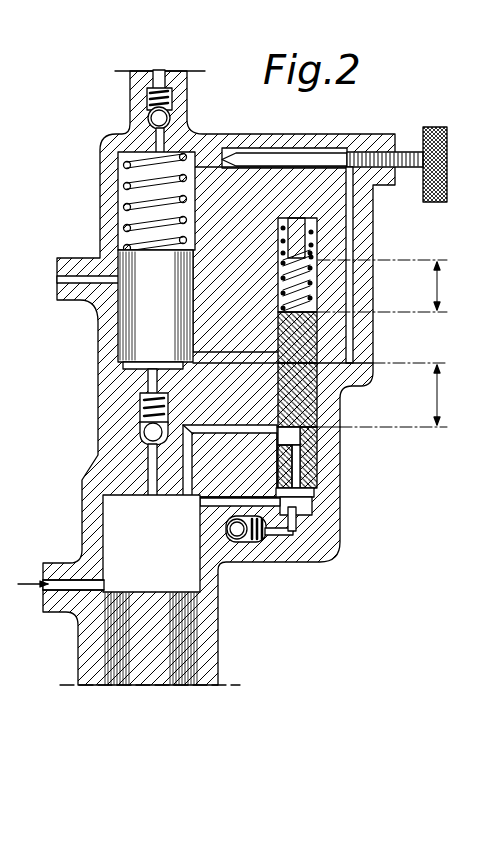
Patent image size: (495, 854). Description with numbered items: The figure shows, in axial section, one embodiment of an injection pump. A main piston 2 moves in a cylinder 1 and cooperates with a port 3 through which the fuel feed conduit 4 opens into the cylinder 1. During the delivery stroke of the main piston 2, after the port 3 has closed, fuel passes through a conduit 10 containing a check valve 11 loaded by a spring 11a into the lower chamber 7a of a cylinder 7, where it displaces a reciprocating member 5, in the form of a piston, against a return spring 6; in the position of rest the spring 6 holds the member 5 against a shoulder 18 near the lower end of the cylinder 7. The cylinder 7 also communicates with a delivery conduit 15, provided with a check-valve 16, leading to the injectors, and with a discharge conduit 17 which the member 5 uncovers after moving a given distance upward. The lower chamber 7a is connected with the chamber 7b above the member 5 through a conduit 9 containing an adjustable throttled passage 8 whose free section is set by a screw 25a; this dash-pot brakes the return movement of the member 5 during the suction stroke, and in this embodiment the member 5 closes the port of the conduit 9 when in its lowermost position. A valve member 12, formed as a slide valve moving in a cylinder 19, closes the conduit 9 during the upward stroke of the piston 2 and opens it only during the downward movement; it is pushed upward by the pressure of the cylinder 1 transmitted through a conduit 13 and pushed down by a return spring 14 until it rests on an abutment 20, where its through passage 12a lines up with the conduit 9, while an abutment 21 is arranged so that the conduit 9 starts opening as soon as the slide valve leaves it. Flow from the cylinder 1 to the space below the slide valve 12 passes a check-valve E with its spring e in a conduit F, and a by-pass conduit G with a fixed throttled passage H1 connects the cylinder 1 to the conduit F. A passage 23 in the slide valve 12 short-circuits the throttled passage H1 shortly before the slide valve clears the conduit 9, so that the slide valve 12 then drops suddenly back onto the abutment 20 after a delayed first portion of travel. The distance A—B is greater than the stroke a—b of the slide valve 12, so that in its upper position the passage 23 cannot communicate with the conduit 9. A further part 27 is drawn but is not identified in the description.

The cylinder 1 is at (200, 565).
The main piston 2 is at (127, 640).
The port 3 is at (103, 588).
The fuel feed conduit 4 is at (63, 577).
The reciprocating member 5 is at (133, 317).
The return spring 6 is at (126, 163).
The cylinder 7 is at (128, 213).
The lower chamber 7a is at (130, 363).
The chamber 7b is at (138, 193).
The adjustable throttled passage 8 is at (223, 156).
The conduit 9 is at (345, 328).
The conduit 10 is at (158, 483).
The check valve 11 is at (142, 425).
The spring 11a is at (143, 407).
The valve member 12 is at (300, 392).
The passage 12a is at (302, 360).
The conduit 13 is at (297, 505).
The return spring 14 is at (310, 282).
The delivery conduit 15 is at (157, 137).
The check-valve 16 is at (152, 110).
The discharge conduit 17 is at (73, 274).
The shoulder 18 is at (178, 370).
The cylinder 19 is at (315, 293).
The abutment 20 is at (313, 485).
The abutment 21 is at (295, 242).
The passage 23 is at (295, 460).
The screw 25a is at (308, 160).
The chamber 27 is at (188, 462).
The check-valve E is at (234, 539).
The spring e is at (257, 540).
The conduit F is at (280, 531).
The by-pass conduit G is at (263, 507).
The throttled passage H1 is at (310, 493).
The stroke end position a is at (390, 291).
The stroke end position b is at (390, 257).
The distance end position A is at (368, 400).
The distance end position B is at (416, 363).